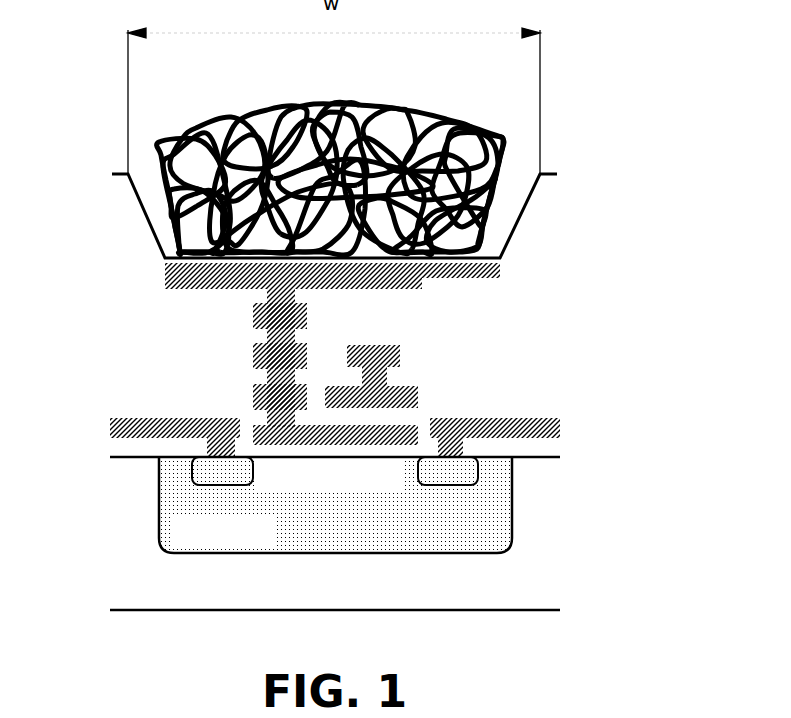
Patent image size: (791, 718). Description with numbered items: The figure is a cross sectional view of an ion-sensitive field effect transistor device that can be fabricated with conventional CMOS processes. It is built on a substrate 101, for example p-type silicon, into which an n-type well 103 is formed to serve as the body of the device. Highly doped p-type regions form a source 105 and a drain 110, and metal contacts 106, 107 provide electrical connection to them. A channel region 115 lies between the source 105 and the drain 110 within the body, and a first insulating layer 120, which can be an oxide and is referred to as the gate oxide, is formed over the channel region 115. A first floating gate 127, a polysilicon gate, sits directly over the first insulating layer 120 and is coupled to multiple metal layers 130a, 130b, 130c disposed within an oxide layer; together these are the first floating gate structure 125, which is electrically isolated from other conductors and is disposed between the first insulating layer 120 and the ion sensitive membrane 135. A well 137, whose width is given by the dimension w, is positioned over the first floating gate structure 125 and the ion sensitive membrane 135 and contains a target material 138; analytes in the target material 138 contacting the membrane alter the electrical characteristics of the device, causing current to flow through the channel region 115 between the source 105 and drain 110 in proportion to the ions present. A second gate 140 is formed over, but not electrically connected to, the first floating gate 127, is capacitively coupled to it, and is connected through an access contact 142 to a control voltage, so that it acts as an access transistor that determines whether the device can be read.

The substrate 101 is at (335, 591).
The n-type well 103 is at (335, 505).
The source 105 is at (192, 478).
The metal contact 106 is at (115, 418).
The metal contact 107 is at (545, 418).
The drain 110 is at (480, 466).
The channel region 115 is at (330, 475).
The first insulating layer 120 is at (420, 451).
The first floating gate structure 125 is at (208, 358).
The first floating gate 127 is at (250, 434).
The metal layer 130a is at (280, 397).
The metal layer 130b is at (280, 356).
The metal layer 130c is at (280, 316).
The ion sensitive membrane 135 is at (168, 273).
The well 137 is at (525, 207).
The target material 138 is at (182, 131).
The second gate 140 is at (418, 389).
The access contact 142 is at (402, 353).